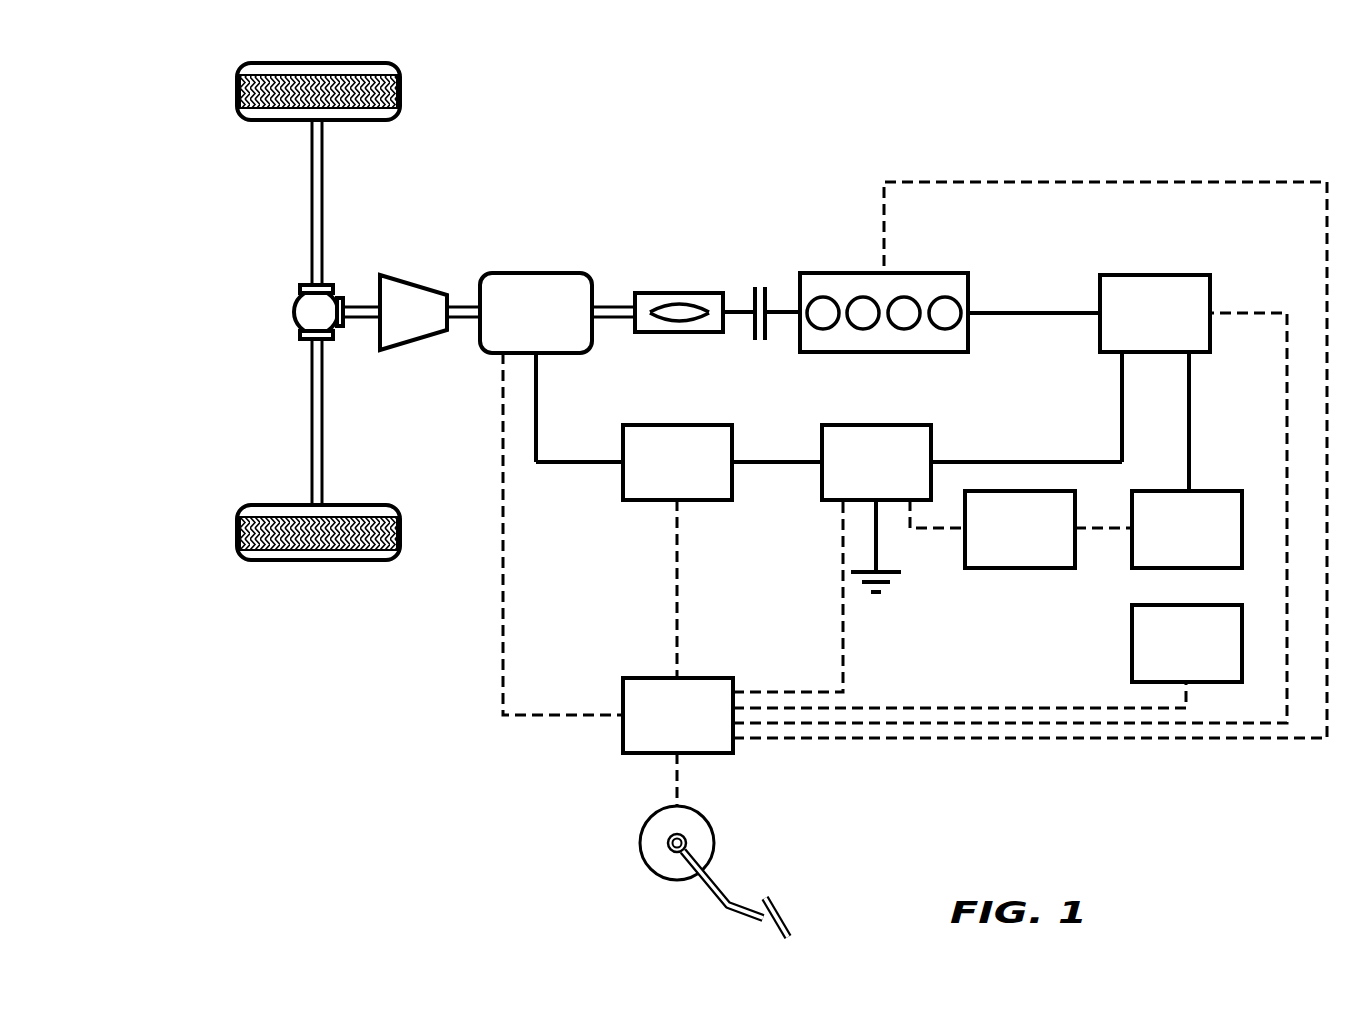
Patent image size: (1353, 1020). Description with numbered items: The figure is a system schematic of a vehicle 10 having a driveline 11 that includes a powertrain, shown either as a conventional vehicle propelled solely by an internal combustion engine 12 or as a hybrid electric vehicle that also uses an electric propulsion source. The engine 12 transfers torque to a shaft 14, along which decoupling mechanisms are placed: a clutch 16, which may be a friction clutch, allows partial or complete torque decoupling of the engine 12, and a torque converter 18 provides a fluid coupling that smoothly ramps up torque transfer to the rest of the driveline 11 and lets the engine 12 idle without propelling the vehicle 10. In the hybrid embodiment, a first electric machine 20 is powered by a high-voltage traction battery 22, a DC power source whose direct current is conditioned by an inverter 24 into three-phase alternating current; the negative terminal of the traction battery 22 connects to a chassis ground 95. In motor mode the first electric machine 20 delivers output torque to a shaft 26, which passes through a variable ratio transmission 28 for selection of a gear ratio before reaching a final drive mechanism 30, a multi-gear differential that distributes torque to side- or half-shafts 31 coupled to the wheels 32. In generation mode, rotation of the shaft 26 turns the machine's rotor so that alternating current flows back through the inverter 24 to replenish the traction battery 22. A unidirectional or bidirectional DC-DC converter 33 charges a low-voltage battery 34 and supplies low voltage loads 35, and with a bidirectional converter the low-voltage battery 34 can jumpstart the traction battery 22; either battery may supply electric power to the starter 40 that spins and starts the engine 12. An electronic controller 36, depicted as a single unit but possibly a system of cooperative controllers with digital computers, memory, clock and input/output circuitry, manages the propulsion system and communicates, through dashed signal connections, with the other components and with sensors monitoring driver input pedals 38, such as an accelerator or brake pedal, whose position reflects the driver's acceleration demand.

The vehicle 10 is at (158, 190).
The driveline 11 is at (612, 256).
The internal combustion engine 12 is at (853, 273).
The shaft 14 is at (781, 310).
The clutch 16 is at (752, 335).
The torque converter 18 is at (677, 293).
The first electric machine 20 is at (535, 273).
The high-voltage traction battery 22 is at (877, 425).
The inverter 24 is at (677, 425).
The shaft 26 is at (465, 305).
The variable ratio transmission 28 is at (415, 278).
The final drive mechanism 30 is at (294, 308).
The half-shaft 31 is at (311, 207).
The wheel 32 is at (237, 88).
The DC-DC converter 33 is at (1020, 568).
The low-voltage battery 34 is at (1215, 491).
The low voltage loads 35 is at (1132, 642).
The electronic controller 36 is at (647, 678).
The driver input pedal 38 is at (712, 875).
The starter 40 is at (1155, 275).
The chassis ground 95 is at (878, 541).